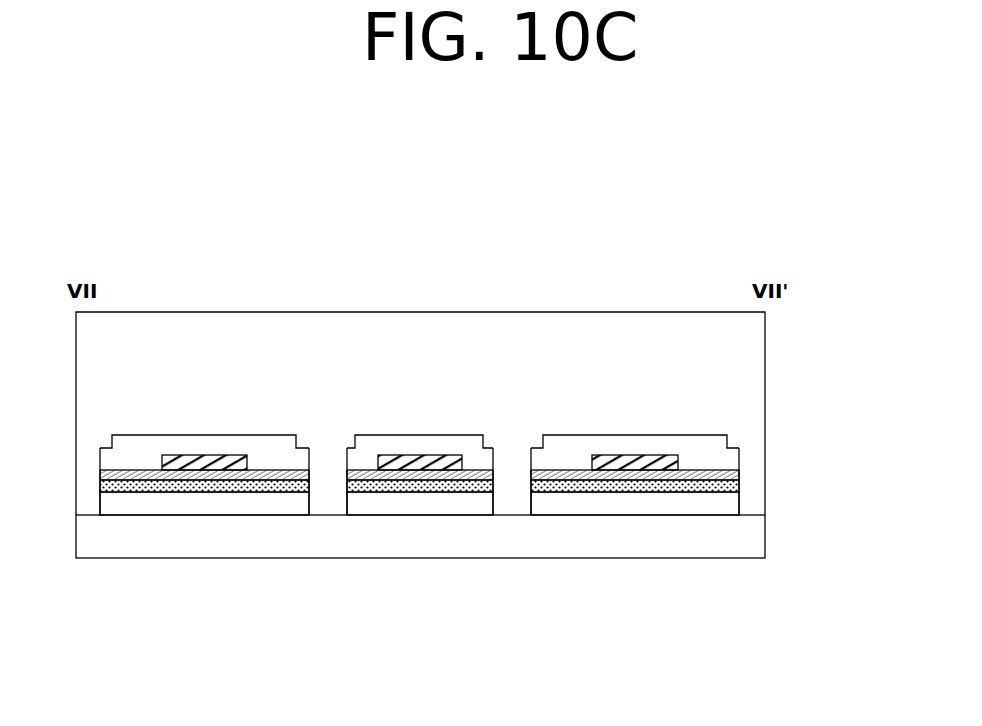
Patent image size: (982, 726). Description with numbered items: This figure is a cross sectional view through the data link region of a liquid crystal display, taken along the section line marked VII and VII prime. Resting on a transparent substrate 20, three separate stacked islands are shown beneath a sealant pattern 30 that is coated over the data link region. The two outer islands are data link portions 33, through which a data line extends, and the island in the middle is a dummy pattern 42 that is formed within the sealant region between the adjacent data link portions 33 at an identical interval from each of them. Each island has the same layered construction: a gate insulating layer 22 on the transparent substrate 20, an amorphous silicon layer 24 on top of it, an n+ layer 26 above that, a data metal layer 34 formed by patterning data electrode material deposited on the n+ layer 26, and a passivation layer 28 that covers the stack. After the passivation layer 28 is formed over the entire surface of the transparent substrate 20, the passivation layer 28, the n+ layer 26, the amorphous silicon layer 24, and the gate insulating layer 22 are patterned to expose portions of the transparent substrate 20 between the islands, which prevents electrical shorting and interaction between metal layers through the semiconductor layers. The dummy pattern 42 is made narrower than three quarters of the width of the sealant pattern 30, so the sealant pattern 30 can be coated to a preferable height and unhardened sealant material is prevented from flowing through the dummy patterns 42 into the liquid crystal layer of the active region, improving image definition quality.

The transparent substrate 20 is at (737, 538).
The gate insulating layer 22 is at (730, 500).
The amorphous silicon layer 24 is at (733, 482).
The n+ layer 26 is at (733, 468).
The passivation layer 28 is at (720, 450).
The sealant pattern 30 is at (742, 352).
The data link portion 33 is at (205, 427).
The data metal layer 34 is at (210, 458).
The dummy pattern 42 is at (425, 427).